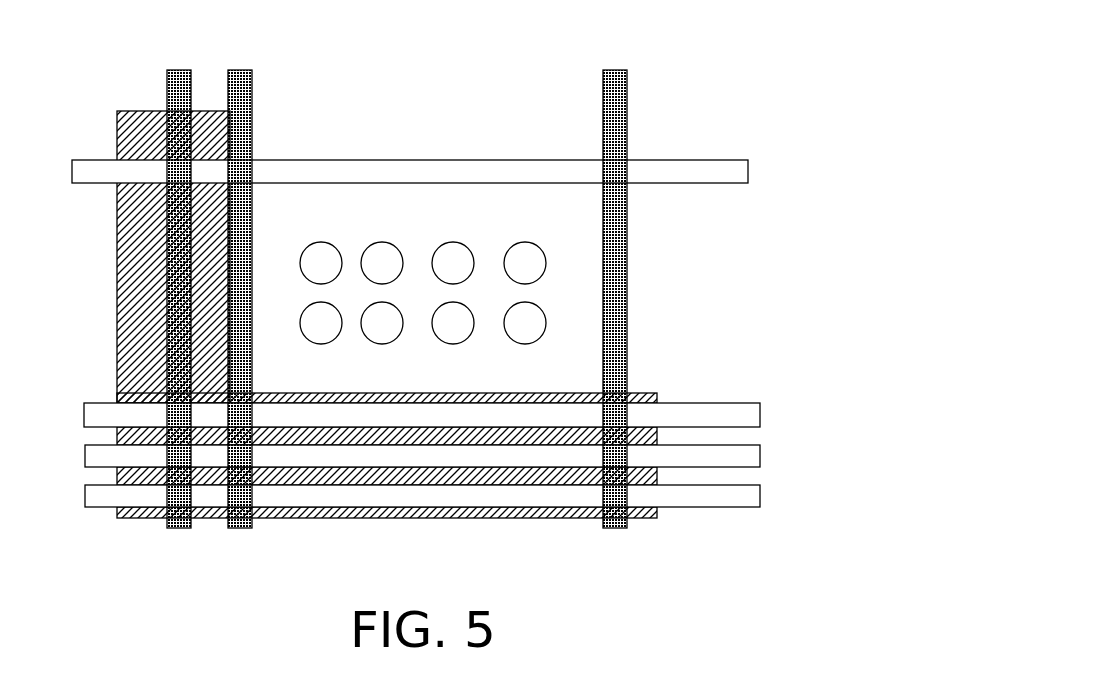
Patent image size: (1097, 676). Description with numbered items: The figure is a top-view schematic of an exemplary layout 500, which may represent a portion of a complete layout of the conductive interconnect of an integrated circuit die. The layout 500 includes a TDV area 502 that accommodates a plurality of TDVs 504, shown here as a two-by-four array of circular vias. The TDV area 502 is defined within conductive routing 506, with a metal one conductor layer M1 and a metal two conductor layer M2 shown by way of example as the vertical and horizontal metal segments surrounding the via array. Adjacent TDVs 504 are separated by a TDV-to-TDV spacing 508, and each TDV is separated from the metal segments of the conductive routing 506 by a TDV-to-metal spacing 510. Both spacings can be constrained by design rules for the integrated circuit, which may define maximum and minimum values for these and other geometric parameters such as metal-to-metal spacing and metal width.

The layout 500 is at (432, 339).
The TDV area 502 is at (538, 218).
The TDV 504 is at (545, 258).
The conductive routing 506 is at (722, 403).
The TDV-to-TDV spacing 508 is at (395, 345).
The TDV-to-metal spacing 510 is at (323, 184).
The metal 1 conductor layer M1 is at (627, 107).
The metal 2 conductor layer M2 is at (741, 161).